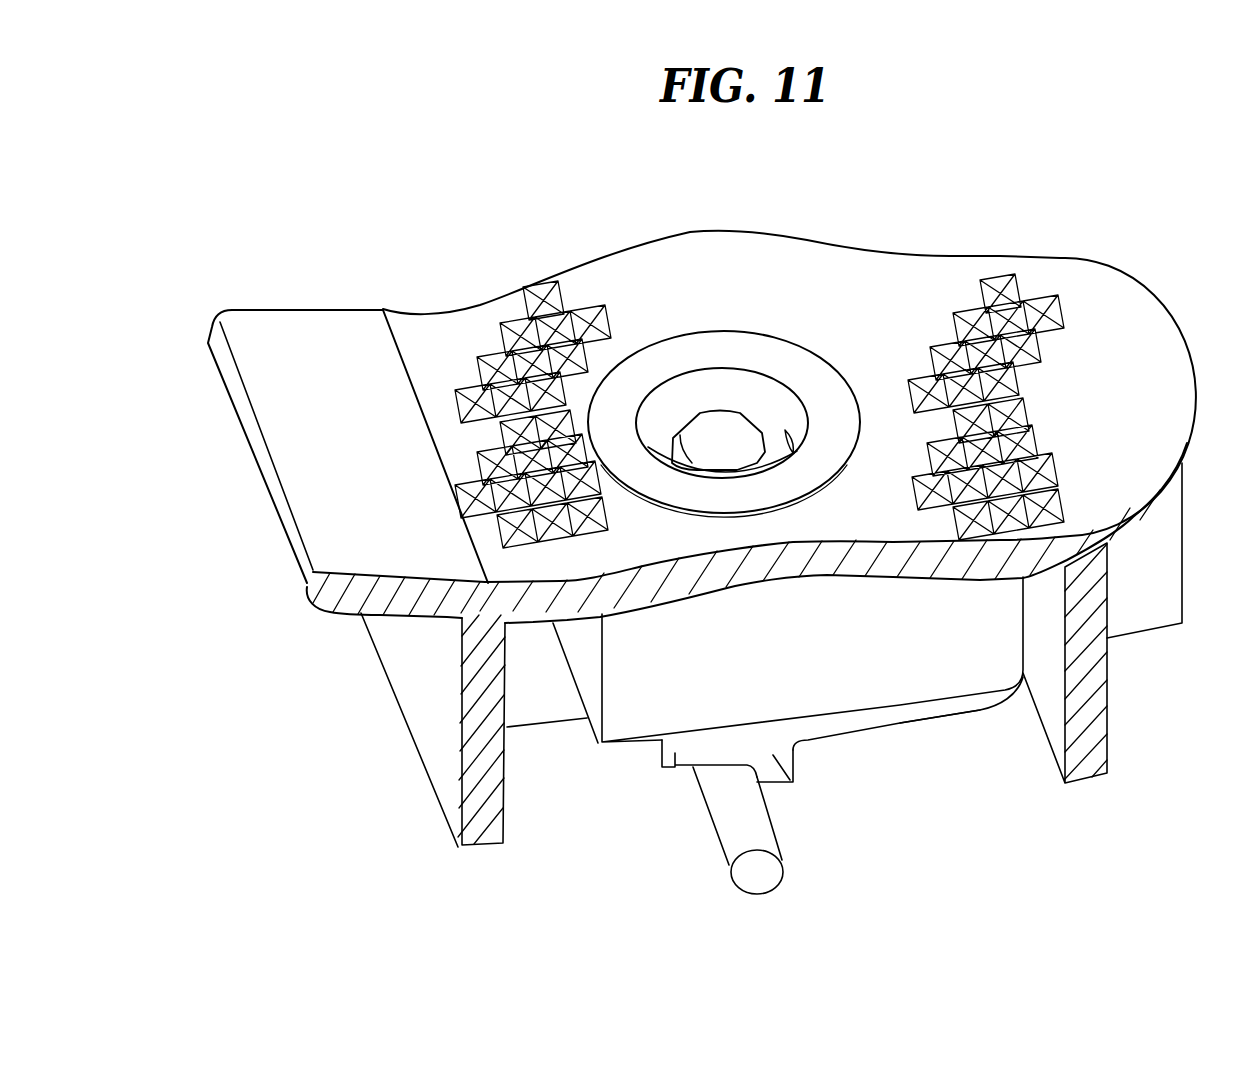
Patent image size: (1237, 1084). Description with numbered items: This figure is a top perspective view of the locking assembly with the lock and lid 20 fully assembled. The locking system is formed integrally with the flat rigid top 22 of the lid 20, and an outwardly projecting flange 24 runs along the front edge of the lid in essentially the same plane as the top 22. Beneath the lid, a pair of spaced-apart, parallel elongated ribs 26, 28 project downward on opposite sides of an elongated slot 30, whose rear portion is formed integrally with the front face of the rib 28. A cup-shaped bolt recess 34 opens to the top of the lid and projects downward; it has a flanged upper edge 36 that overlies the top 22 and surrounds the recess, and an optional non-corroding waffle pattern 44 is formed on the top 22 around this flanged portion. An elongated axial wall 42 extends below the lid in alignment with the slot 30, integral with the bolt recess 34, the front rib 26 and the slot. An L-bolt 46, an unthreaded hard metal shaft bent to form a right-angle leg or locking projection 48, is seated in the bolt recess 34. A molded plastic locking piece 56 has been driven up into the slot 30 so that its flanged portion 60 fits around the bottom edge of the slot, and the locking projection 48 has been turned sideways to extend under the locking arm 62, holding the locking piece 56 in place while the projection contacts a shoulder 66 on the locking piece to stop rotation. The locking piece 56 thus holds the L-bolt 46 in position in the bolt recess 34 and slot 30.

The lid 20 is at (963, 320).
The top 22 is at (583, 303).
The flange 24 is at (275, 332).
The rib 26 is at (443, 755).
The rib 28 is at (1100, 723).
The slot 30 is at (840, 648).
The bolt recess 34 is at (708, 400).
The flanged upper edge 36 is at (777, 357).
The axial wall 42 is at (543, 713).
The waffle pattern 44 is at (1020, 441).
The L-bolt 46 is at (725, 430).
The locking projection 48 is at (733, 848).
The locking piece 56 is at (978, 728).
The flanged portion 60 is at (907, 723).
The arm 62 is at (675, 760).
The shoulder 66 is at (793, 783).